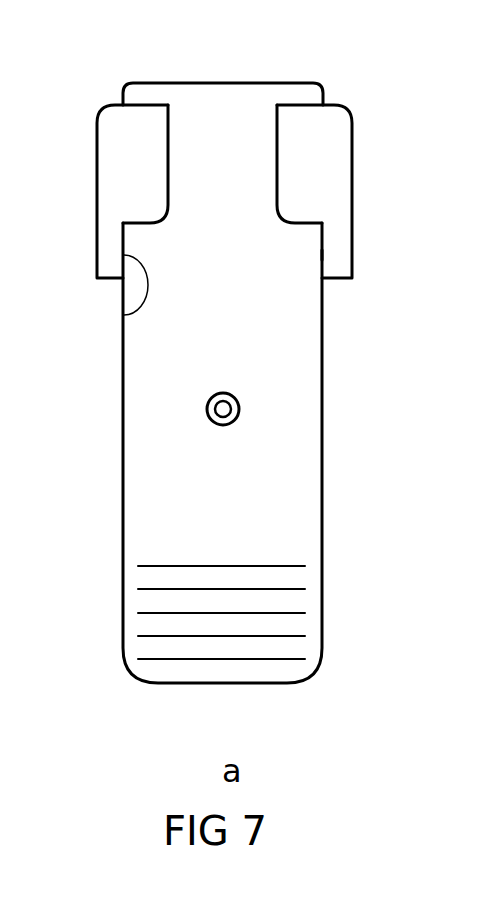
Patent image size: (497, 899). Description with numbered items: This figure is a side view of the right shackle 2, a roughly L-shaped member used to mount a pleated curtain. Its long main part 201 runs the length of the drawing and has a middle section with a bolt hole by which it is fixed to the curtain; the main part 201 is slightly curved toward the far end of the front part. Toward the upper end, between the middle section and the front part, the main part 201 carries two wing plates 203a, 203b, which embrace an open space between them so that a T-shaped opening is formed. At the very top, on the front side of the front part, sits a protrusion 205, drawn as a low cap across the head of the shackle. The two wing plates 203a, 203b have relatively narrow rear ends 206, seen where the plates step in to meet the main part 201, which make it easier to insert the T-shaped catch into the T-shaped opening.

The right shackle 2 is at (209, 357).
The main part 201 is at (124, 438).
The wing plate 203a is at (105, 195).
The wing plate 203b is at (322, 177).
The protrusion 205 is at (273, 82).
The rear ends 206 is at (124, 314).